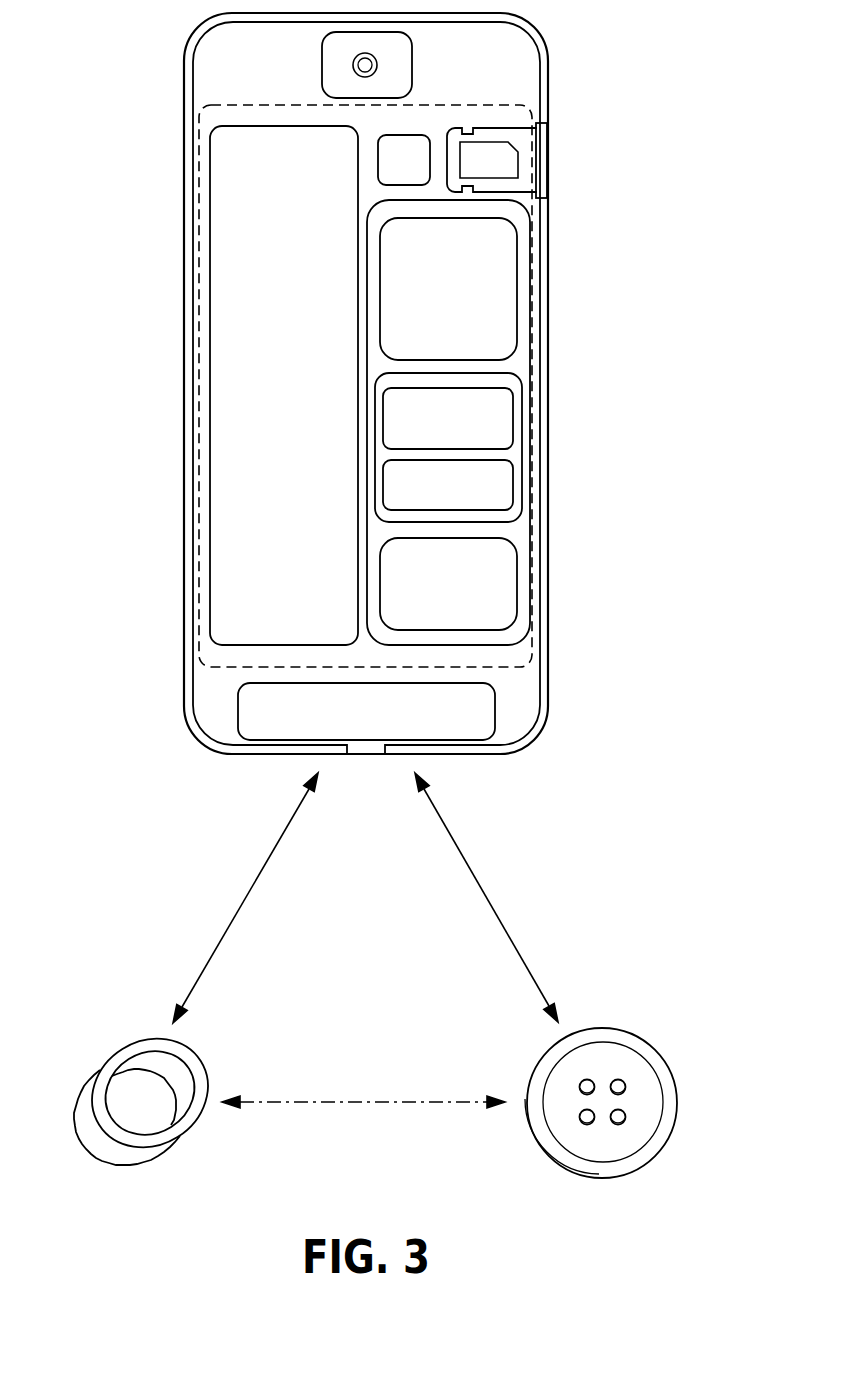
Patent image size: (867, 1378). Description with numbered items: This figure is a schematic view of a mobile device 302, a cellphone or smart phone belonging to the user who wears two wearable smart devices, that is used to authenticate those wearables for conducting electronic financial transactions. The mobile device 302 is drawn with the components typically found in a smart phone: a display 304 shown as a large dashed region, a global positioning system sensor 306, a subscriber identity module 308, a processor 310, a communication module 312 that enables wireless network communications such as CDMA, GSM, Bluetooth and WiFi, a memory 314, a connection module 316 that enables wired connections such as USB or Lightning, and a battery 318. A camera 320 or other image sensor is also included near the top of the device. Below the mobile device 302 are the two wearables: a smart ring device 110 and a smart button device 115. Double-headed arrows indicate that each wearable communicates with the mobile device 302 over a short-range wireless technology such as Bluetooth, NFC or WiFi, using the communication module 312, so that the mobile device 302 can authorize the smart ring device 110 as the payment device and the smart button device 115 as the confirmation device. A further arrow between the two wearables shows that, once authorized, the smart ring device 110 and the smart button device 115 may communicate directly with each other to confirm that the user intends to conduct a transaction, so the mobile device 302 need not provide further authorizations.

The mobile device 302 is at (184, 94).
The display 304 is at (240, 666).
The global positioning system (GPS) sensor 306 is at (412, 134).
The subscriber identity module (SIM) 308 is at (482, 128).
The processor 310 is at (422, 303).
The communication module 312 is at (422, 433).
The memory 314 is at (422, 500).
The connection module 316 is at (422, 595).
The battery 318 is at (259, 397).
The camera 320 is at (320, 56).
The smart ring device 110 is at (112, 1050).
The smart button device 115 is at (613, 1028).